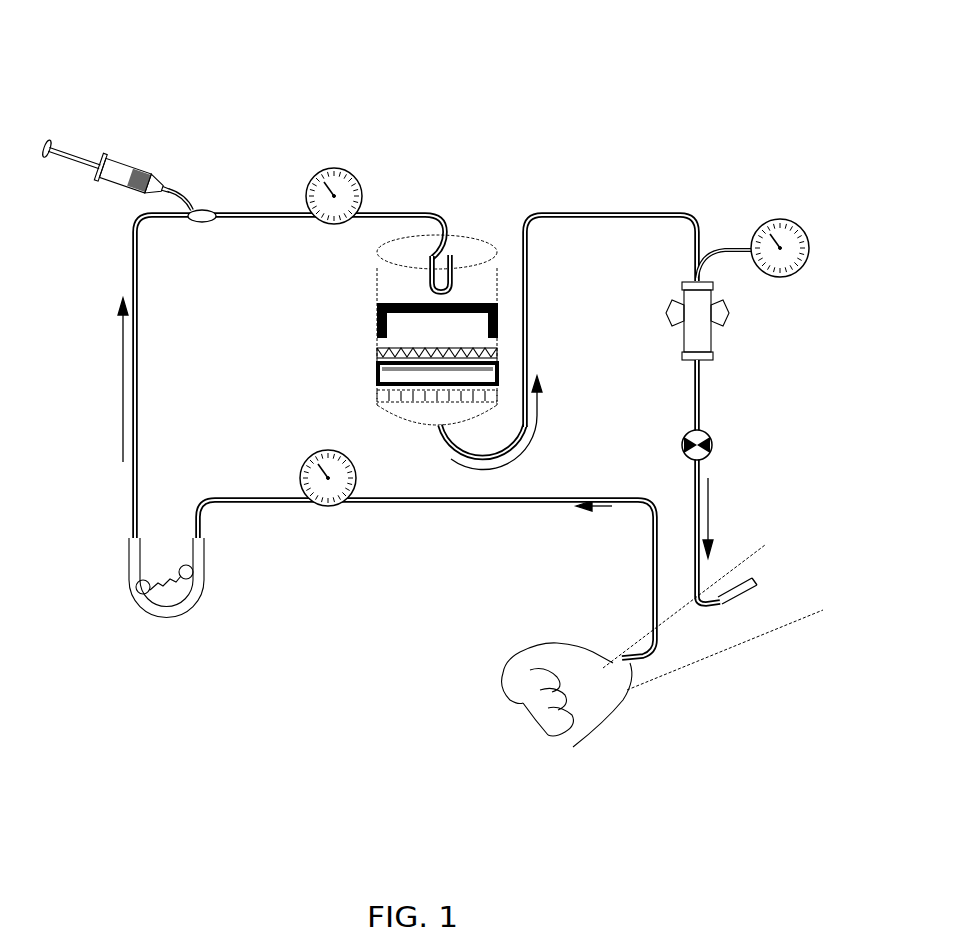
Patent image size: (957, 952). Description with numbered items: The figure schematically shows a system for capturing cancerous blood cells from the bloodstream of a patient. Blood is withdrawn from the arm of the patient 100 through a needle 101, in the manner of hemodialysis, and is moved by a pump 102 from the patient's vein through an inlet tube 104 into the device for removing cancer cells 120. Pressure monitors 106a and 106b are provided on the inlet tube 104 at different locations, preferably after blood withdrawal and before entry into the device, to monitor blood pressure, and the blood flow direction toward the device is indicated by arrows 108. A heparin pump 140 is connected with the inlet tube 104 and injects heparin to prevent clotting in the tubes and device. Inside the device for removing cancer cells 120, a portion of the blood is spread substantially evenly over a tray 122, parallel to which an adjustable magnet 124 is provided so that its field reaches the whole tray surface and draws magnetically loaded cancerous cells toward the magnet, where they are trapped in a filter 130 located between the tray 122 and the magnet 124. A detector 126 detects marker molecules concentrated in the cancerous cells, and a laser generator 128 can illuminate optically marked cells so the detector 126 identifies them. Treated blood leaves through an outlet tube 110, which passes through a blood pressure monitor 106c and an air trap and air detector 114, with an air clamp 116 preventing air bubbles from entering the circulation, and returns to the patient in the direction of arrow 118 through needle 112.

The arm of the patient 100 is at (712, 625).
The needle 101 is at (605, 718).
The pump 102 is at (193, 590).
The inlet tube 104 is at (465, 503).
The pressure monitor 106a is at (340, 505).
The pressure monitor 106b is at (330, 168).
The blood pressure monitor 106c is at (790, 226).
The arrows 108 is at (120, 372).
The outlet tube 110 is at (665, 215).
The needle 112 is at (725, 597).
The air trap and air detector 114 is at (698, 350).
The air clamp 116 is at (708, 432).
The arrow 118 is at (714, 492).
The device for removing cancer cells 120 is at (445, 269).
The tray 122 is at (400, 377).
The adjustable magnet 124 is at (493, 303).
The detector 126 is at (377, 397).
The laser generator 128 is at (428, 262).
The filter 130 is at (498, 350).
The heparin pump 140 is at (196, 210).